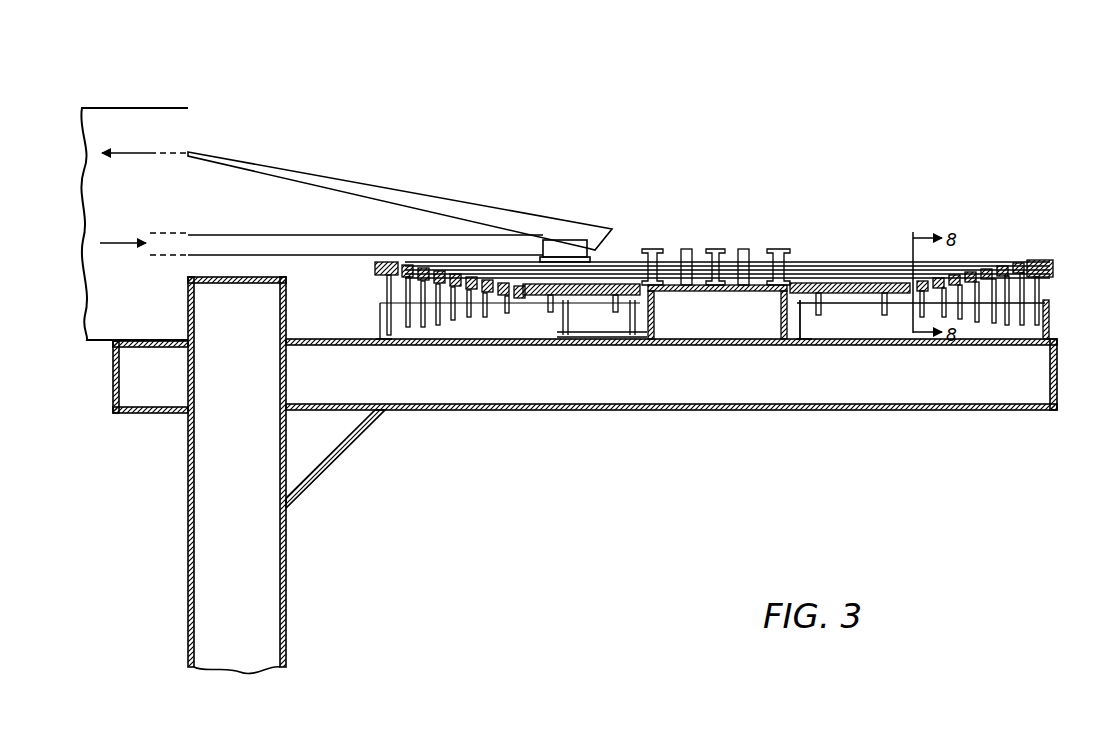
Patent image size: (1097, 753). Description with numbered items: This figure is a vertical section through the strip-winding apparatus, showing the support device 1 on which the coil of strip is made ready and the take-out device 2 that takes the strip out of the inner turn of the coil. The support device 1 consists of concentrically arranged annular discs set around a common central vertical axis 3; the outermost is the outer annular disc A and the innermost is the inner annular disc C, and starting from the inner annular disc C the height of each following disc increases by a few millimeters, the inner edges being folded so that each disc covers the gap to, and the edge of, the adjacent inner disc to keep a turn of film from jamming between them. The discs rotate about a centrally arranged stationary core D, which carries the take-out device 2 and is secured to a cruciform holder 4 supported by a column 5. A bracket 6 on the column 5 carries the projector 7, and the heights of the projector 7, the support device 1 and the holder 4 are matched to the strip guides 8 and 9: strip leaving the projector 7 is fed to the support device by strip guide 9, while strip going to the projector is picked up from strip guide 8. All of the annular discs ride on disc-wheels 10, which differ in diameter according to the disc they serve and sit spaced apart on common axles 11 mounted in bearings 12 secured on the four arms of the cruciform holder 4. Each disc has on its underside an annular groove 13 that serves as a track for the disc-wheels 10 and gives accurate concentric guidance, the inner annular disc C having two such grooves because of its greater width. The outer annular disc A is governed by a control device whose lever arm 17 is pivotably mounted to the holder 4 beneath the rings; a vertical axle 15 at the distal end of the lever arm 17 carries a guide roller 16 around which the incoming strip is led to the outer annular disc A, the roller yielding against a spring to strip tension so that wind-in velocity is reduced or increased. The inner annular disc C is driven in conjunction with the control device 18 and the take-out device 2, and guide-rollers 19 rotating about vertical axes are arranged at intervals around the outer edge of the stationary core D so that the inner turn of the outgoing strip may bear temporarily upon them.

The support device 1 is at (953, 193).
The take-out device 2 is at (757, 196).
The central vertical axis 3 is at (713, 249).
The cruciform holder 4 is at (745, 411).
The column 5 is at (200, 479).
The bracket 6 is at (140, 403).
The projector 7 is at (143, 116).
The strip guide 8 is at (190, 151).
The strip guide 9 is at (190, 236).
The disc-wheels 10 is at (962, 332).
The axles 11 is at (852, 301).
The bearings 12 is at (800, 328).
The annular groove 13 is at (371, 280).
The vertical axle 15 is at (562, 321).
The guide roller 16 is at (560, 245).
The lever arm 17 is at (595, 335).
The control device 18 is at (712, 249).
The guide-rollers 19 is at (650, 249).
The outer annular disc A is at (1038, 261).
The inner annular disc C is at (851, 282).
The stationary core D is at (655, 306).